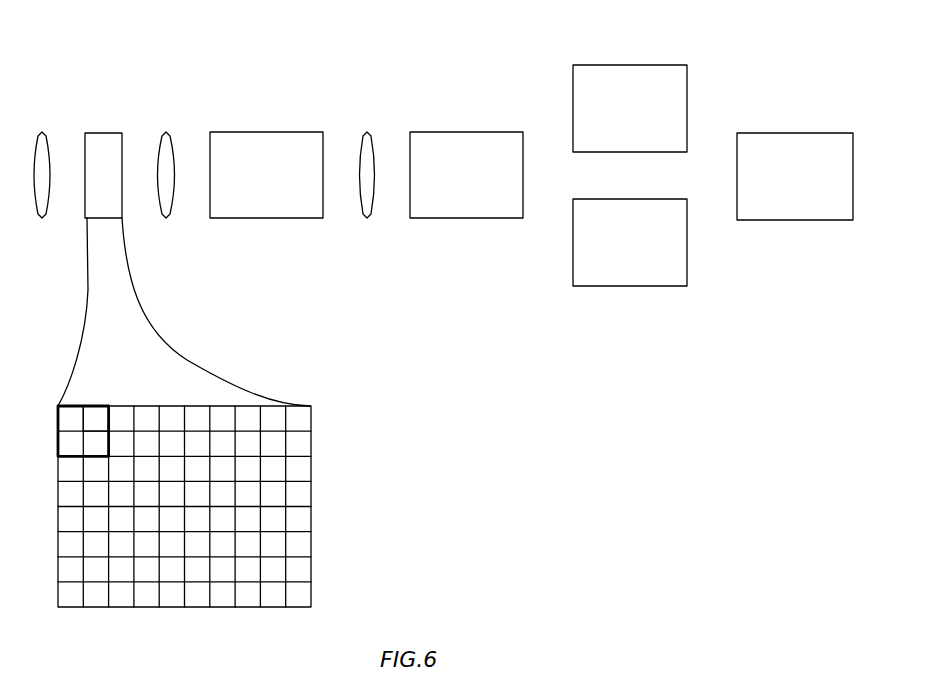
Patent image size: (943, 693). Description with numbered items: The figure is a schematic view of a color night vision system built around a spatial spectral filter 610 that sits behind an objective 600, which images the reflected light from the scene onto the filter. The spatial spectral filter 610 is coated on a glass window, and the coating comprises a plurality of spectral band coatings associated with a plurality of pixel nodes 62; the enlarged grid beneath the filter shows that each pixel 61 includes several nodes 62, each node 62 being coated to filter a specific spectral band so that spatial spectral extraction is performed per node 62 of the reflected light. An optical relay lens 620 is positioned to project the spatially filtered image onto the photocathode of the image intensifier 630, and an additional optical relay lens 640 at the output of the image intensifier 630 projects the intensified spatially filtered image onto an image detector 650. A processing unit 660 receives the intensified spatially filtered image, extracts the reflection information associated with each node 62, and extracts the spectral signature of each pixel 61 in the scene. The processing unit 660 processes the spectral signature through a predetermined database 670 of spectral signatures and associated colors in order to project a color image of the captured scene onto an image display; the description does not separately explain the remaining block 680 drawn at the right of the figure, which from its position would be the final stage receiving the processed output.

The objective 600 is at (42, 218).
The spatial spectral filter 610 is at (97, 133).
The optical relay lens 620 is at (166, 218).
The image intensifier 630 is at (237, 218).
The additional optical relay lens 640 is at (365, 132).
The image detector 650 is at (440, 218).
The processing unit 660 is at (655, 65).
The predetermined database of spectral signatures 670 is at (605, 286).
The block 680 is at (770, 133).
The pixel 61 is at (97, 405).
The pixel node 62 is at (64, 421).